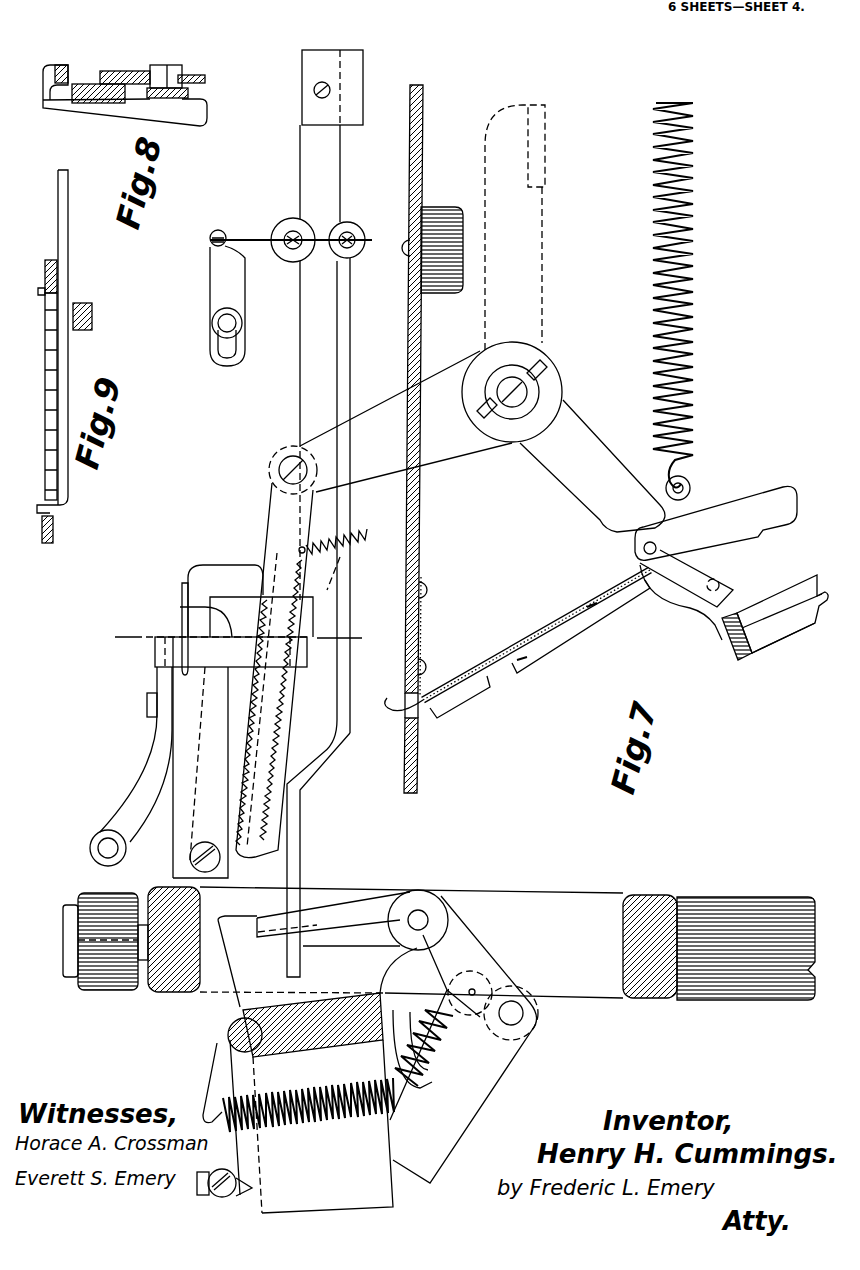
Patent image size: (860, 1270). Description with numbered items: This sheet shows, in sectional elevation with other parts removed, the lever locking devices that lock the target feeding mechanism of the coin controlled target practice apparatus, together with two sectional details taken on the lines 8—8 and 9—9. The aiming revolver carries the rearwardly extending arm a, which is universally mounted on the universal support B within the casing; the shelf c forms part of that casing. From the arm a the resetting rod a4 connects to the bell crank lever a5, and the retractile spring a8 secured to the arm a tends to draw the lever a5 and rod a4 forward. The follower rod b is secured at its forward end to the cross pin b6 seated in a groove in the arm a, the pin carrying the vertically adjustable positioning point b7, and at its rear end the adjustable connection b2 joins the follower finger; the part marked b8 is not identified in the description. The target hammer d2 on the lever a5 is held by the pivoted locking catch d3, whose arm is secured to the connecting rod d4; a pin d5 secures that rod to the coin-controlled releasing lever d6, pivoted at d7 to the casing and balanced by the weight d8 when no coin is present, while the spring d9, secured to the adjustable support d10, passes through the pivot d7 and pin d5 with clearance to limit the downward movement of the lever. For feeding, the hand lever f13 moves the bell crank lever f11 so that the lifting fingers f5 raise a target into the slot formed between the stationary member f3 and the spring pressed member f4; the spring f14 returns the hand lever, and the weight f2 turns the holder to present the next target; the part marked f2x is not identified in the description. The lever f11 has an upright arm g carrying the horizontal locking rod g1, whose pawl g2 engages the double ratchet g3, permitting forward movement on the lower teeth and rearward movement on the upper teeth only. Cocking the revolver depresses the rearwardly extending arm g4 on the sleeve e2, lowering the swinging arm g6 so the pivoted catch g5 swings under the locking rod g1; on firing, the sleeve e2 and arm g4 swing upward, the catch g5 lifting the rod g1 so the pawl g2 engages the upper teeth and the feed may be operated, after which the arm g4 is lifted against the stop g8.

In FIG. 7, the upright arm g is at (393, 408).
In FIG. 8, the locking rod g1 is at (188, 93).
In FIG. 9, the locking rod g1 is at (68, 240).
In FIG. 7, the locking rod g1 is at (269, 536).
In FIG. 8, the pawl g2 is at (168, 65).
In FIG. 9, the pawl g2 is at (53, 532).
In FIG. 7, the pawl g2 is at (360, 546).
In FIG. 8, the double ratchet g3 is at (128, 71).
In FIG. 9, the double ratchet g3 is at (45, 376).
In FIG. 7, the double ratchet g3 is at (288, 762).
In FIG. 8, the rearwardly extending arm g4 is at (60, 65).
In FIG. 7, the rearwardly extending arm g4 is at (137, 792).
In FIG. 8, the catch g5 is at (195, 120).
In FIG. 9, the catch g5 is at (92, 316).
In FIG. 7, the catch g5 is at (195, 657).
In FIG. 8, the swinging arm g6 is at (92, 84).
In FIG. 7, the swinging arm g6 is at (243, 721).
In FIG. 7, the stop g8 is at (148, 700).
In FIG. 7, the sleeve e2 is at (100, 838).
In FIG. 7, the shelf c is at (420, 530).
In FIG. 7, the target hammer d2 is at (334, 910).
In FIG. 7, the locking catch d3 is at (288, 948).
In FIG. 7, the connecting rod d4 is at (340, 745).
In FIG. 7, the pin d5 is at (348, 234).
In FIG. 7, the releasing lever d6 is at (325, 429).
In FIG. 7, the pivot d7 is at (293, 232).
In FIG. 7, the weight d8 is at (363, 110).
In FIG. 7, the spring d9 is at (252, 243).
In FIG. 7, the adjustable support d10 is at (210, 292).
In FIG. 7, the weight f2 is at (792, 595).
In FIG. 7, the bar f2x is at (768, 637).
In FIG. 7, the stationary member f3 is at (612, 587).
In FIG. 7, the spring pressed member f4 is at (503, 668).
In FIG. 7, the lifting fingers f5 is at (749, 510).
In FIG. 7, the bell crank lever f11 is at (616, 466).
In FIG. 7, the hand lever f13 is at (536, 238).
In FIG. 7, the spring f14 is at (660, 193).
In FIG. 7, the universal support B is at (178, 992).
In FIG. 7, the arm a is at (342, 1080).
In FIG. 7, the resetting rod a4 is at (461, 1086).
In FIG. 7, the bell crank lever a5 is at (472, 988).
In FIG. 7, the retractile spring a8 is at (421, 1048).
In FIG. 7, the follower rod b is at (313, 1025).
In FIG. 7, the adjustable connection b2 is at (236, 1192).
In FIG. 7, the cross pin b6 is at (228, 1036).
In FIG. 7, the positioning point b7 is at (221, 1117).
In FIG. 7, the spring b8 is at (357, 1092).
In FIG. 7, the section line 8— 8 is at (246, 637).
In FIG. 7, the section line 9— 9 is at (258, 702).